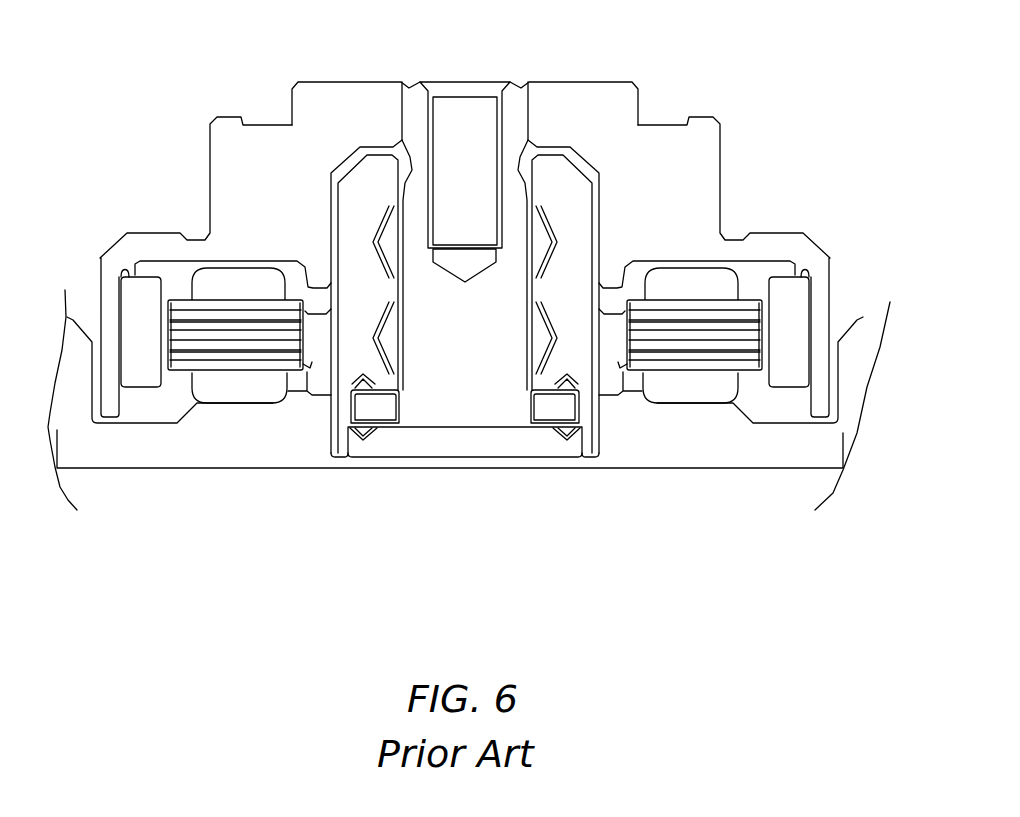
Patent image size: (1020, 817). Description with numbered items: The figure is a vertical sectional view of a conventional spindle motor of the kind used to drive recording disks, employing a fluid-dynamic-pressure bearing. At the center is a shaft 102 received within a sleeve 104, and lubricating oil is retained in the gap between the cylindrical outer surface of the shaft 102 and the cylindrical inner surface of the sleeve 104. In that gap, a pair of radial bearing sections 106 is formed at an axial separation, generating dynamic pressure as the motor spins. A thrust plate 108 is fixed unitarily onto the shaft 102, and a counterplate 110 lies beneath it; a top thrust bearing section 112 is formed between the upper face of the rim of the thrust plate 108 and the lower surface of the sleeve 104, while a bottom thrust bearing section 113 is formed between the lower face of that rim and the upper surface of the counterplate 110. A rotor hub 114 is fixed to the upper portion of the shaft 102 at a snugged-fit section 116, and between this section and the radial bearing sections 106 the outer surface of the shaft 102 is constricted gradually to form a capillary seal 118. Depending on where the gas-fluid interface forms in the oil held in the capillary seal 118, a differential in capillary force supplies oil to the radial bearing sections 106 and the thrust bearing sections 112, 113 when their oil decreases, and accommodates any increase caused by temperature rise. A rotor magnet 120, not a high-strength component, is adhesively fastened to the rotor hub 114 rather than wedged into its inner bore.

The shaft 102 is at (465, 187).
The sleeve 104 is at (568, 210).
The radial bearing sections 106 is at (385, 325).
The thrust plate 108 is at (562, 394).
The counterplate 110 is at (541, 443).
The top thrust bearing section 112 is at (363, 373).
The bottom thrust bearing section 113 is at (365, 440).
The rotor hub 114 is at (673, 212).
The snugged-fit section 116 is at (400, 113).
The capillary seal 118 is at (402, 195).
The rotor magnet 120 is at (140, 337).